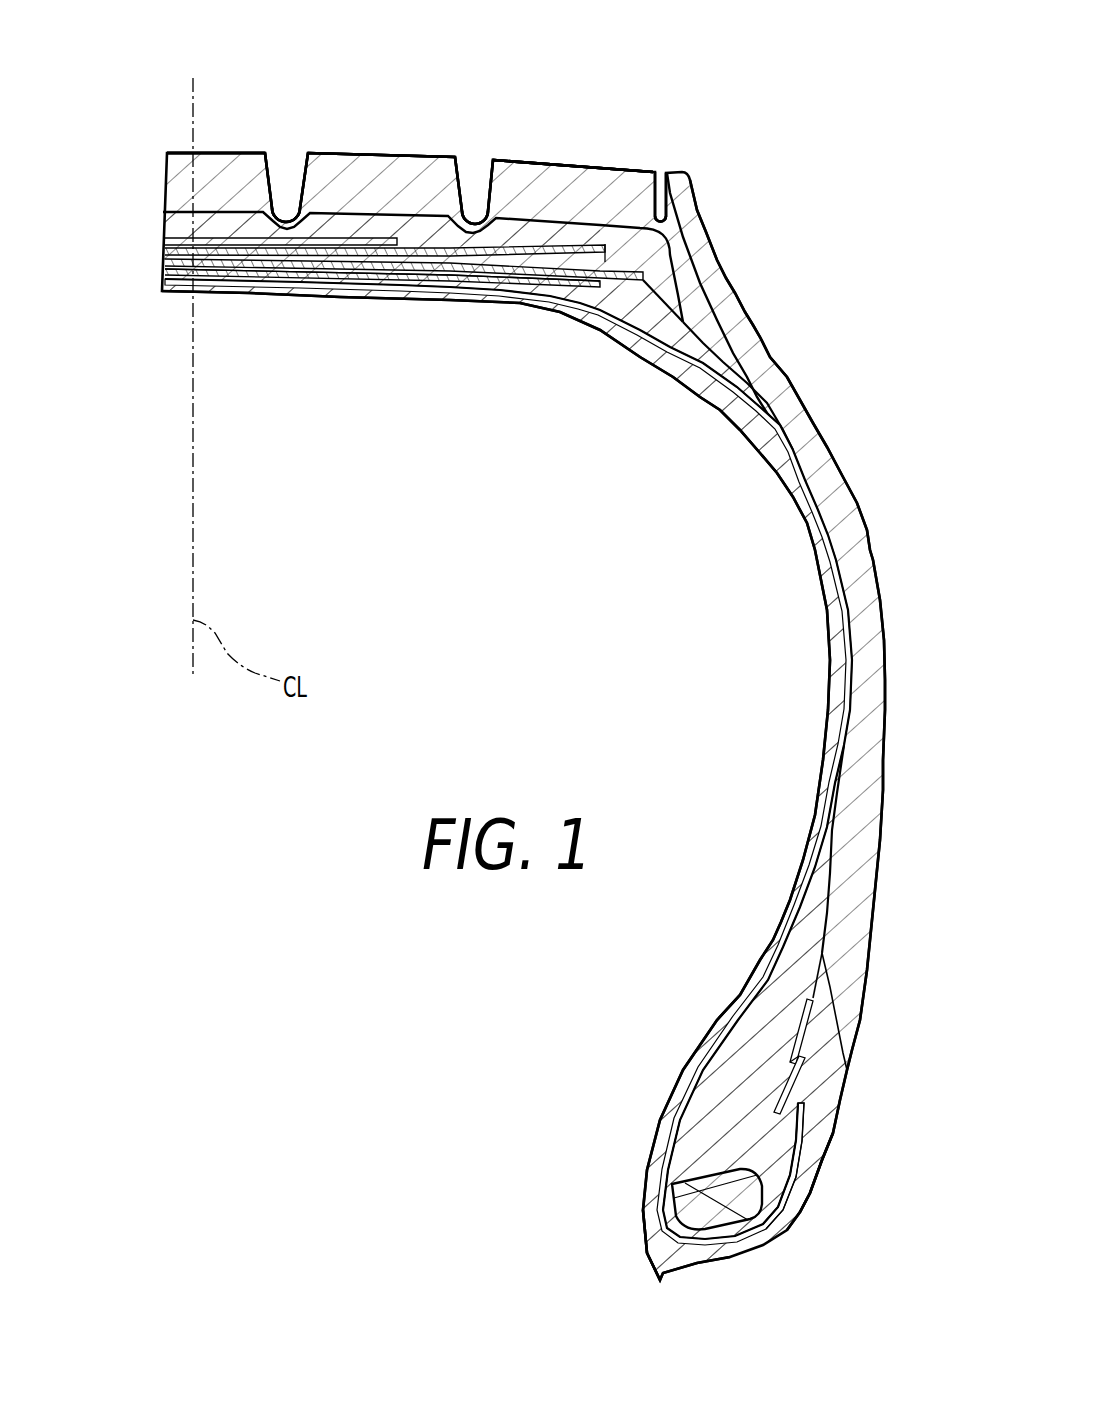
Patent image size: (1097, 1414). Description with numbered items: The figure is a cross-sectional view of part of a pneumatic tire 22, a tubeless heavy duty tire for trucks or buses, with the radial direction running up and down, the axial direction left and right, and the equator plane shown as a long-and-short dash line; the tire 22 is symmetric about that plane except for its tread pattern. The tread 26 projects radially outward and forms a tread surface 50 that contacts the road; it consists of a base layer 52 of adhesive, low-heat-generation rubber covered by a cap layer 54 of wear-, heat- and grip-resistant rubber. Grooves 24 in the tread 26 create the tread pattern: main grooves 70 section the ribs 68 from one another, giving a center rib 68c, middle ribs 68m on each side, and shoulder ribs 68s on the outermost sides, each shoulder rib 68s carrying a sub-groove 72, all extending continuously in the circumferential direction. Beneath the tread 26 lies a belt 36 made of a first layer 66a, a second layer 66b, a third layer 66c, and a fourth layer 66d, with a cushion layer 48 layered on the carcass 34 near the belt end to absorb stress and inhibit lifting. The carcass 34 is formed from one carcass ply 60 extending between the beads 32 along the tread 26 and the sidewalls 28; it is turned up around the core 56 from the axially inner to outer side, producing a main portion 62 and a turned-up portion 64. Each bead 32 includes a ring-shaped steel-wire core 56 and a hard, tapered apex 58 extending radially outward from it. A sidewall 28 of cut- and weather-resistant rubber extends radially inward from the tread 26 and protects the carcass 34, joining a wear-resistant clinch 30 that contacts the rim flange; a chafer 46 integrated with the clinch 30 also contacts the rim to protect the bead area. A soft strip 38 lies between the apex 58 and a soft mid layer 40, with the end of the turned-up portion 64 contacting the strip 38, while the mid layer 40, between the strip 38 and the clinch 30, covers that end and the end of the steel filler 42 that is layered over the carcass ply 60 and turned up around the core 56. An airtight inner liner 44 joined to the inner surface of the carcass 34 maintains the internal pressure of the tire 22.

The pneumatic tire 22 is at (823, 50).
The grooves 24 is at (273, 186).
The tread 26 is at (347, 152).
The sidewalls 28 is at (843, 507).
The clinches 30 is at (810, 1150).
The beads 32 is at (645, 1142).
The carcass 34 is at (351, 302).
The belt 36 is at (179, 240).
The strips 38 is at (797, 1047).
The mid layers 40 is at (817, 1017).
The fillers 42 is at (817, 1187).
The inner liner 44 is at (485, 302).
The chafers 46 is at (658, 1266).
The cushion layers 48 is at (633, 313).
The tread surface 50 is at (242, 152).
The base layer 52 is at (640, 243).
The cap layer 54 is at (512, 170).
The core 56 is at (693, 1207).
The apex 58 is at (710, 1142).
The carcass ply 60 is at (382, 354).
The main portion 62 is at (852, 653).
The turned-up portions 64 is at (800, 1087).
The first layer 66a is at (164, 273).
The second layer 66b is at (166, 262).
The third layer 66c is at (168, 252).
The fourth layer 66d is at (165, 238).
The ribs 68 is at (178, 153).
The center rib 68c is at (202, 87).
The middle rib 68m is at (381, 81).
The shoulder rib 68s is at (573, 94).
The main groove 70 is at (366, 116).
The sub-groove 72 is at (658, 115).